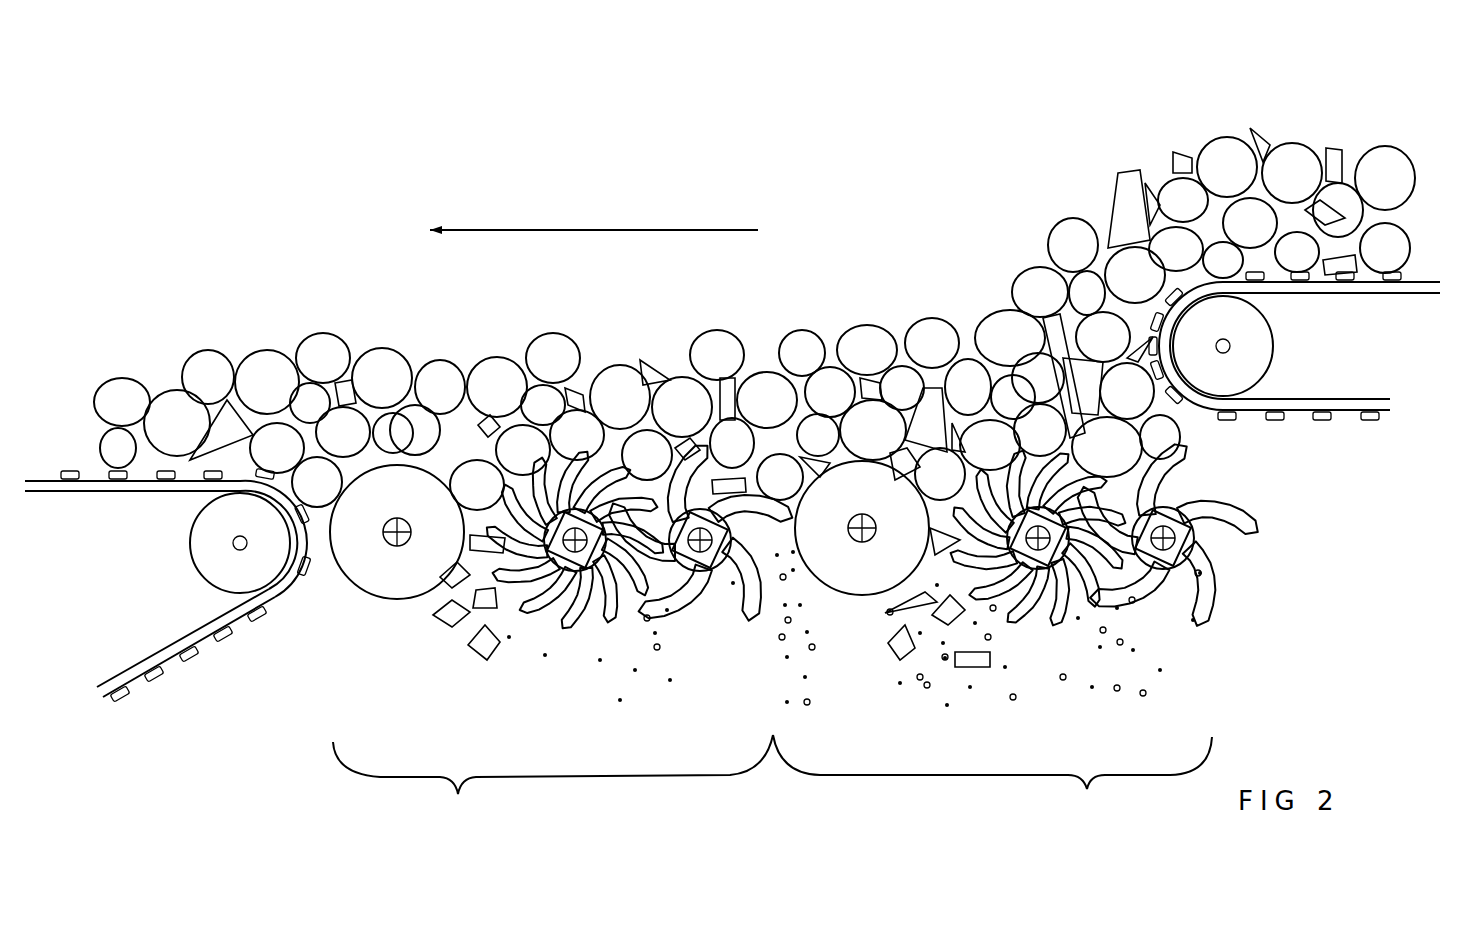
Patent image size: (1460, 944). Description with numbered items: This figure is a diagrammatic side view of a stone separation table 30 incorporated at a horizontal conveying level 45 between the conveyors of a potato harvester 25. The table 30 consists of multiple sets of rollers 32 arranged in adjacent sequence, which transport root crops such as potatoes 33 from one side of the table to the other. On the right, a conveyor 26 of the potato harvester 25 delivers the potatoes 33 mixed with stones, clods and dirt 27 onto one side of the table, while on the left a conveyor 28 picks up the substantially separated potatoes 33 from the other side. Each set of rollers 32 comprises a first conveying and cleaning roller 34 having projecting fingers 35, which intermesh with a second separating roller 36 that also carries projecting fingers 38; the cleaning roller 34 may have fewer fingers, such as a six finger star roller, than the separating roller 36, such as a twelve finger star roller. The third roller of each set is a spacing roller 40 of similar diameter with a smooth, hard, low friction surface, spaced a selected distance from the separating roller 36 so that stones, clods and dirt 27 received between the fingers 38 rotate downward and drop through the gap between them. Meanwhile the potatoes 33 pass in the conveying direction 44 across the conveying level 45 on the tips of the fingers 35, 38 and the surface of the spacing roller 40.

The potato harvester 25 is at (167, 672).
The conveyor 26 is at (1417, 290).
The stones, clods and dirt 27 is at (470, 655).
The conveyor 28 is at (80, 470).
The stone separation table 30 is at (1243, 632).
The set of rollers 32 is at (772, 784).
The potatoes 33 is at (390, 340).
The first conveying and cleaning roller 34 is at (893, 557).
The projecting fingers 35 is at (1278, 505).
The second separating roller 36 is at (622, 615).
The projecting fingers 38 is at (552, 615).
The spacing roller 40 is at (383, 600).
The conveying direction 44 is at (523, 228).
The conveying level 45 is at (532, 310).